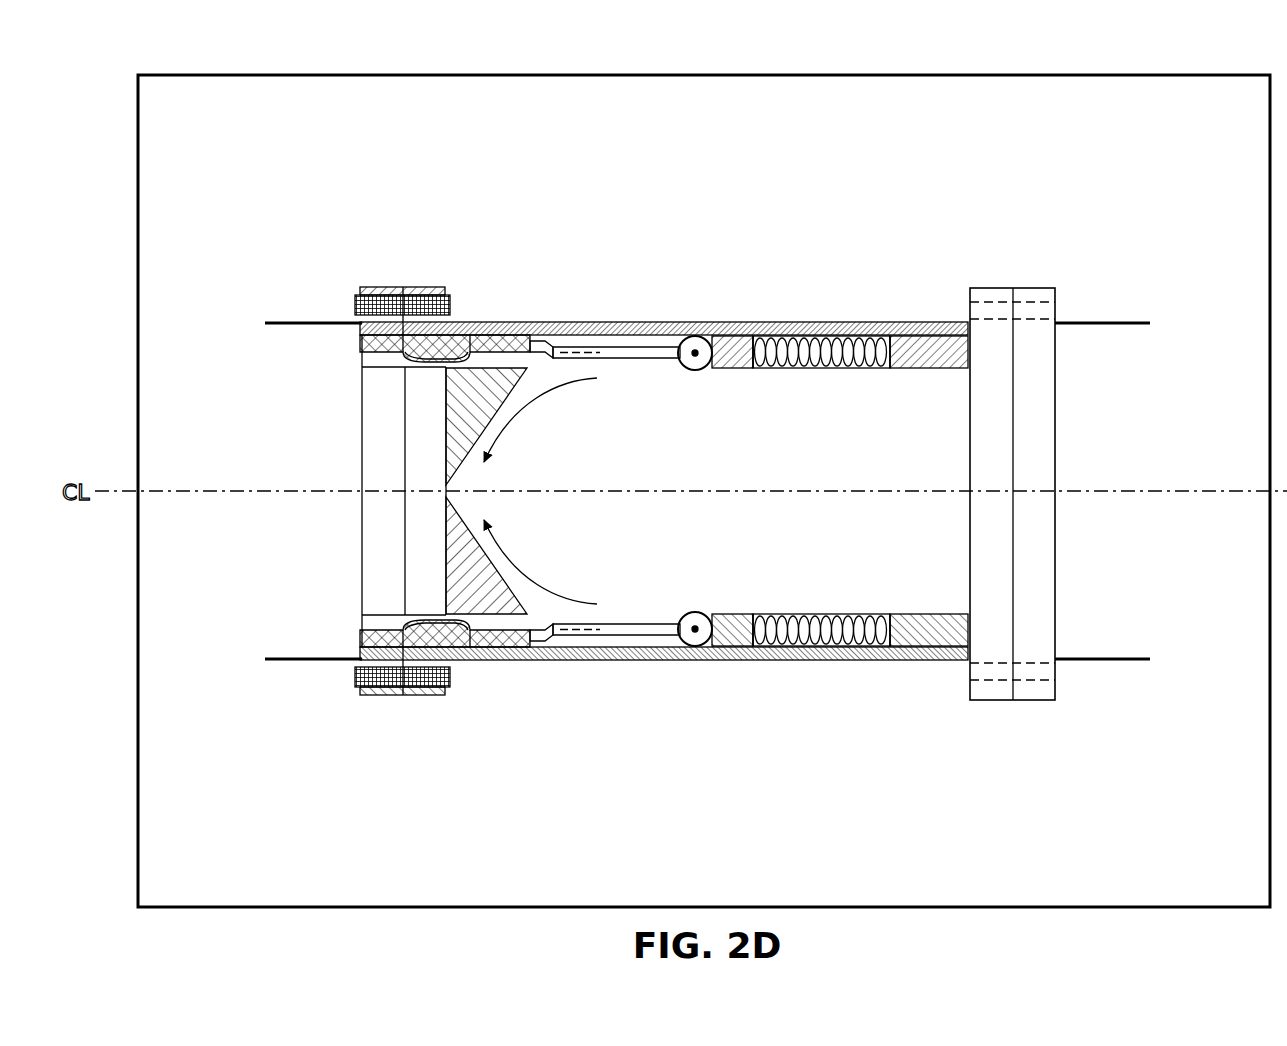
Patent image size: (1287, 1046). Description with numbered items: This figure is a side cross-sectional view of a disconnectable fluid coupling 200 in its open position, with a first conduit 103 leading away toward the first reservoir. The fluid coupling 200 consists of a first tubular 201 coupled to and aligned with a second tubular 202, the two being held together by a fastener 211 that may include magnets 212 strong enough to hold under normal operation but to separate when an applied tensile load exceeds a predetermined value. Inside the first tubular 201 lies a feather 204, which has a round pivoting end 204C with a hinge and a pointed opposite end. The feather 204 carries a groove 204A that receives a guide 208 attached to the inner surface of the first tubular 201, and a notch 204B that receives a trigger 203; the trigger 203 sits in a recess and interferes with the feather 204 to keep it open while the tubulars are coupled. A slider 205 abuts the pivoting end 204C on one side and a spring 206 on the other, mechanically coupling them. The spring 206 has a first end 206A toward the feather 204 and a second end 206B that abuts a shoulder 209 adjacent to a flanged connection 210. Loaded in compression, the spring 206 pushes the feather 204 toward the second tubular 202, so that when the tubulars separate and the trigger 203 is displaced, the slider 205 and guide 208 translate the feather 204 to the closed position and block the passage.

The first conduit 103 is at (1105, 661).
The fluid coupling 200 is at (88, 126).
The first tubular 201 is at (466, 204).
The second tubular 202 is at (298, 414).
The trigger 203 is at (487, 642).
The feather 204 is at (608, 470).
The groove 204A is at (588, 346).
The notch 204B is at (538, 336).
The pivoting end 204C is at (695, 338).
The slider 205 is at (735, 660).
The spring 206 is at (877, 490).
The first end 206A is at (790, 350).
The second end 206B is at (895, 350).
The guide 208 is at (445, 580).
The shoulder 209 is at (920, 660).
The flanged connection 210 is at (1042, 287).
The fastener 211 is at (399, 284).
The magnets 212 is at (357, 299).